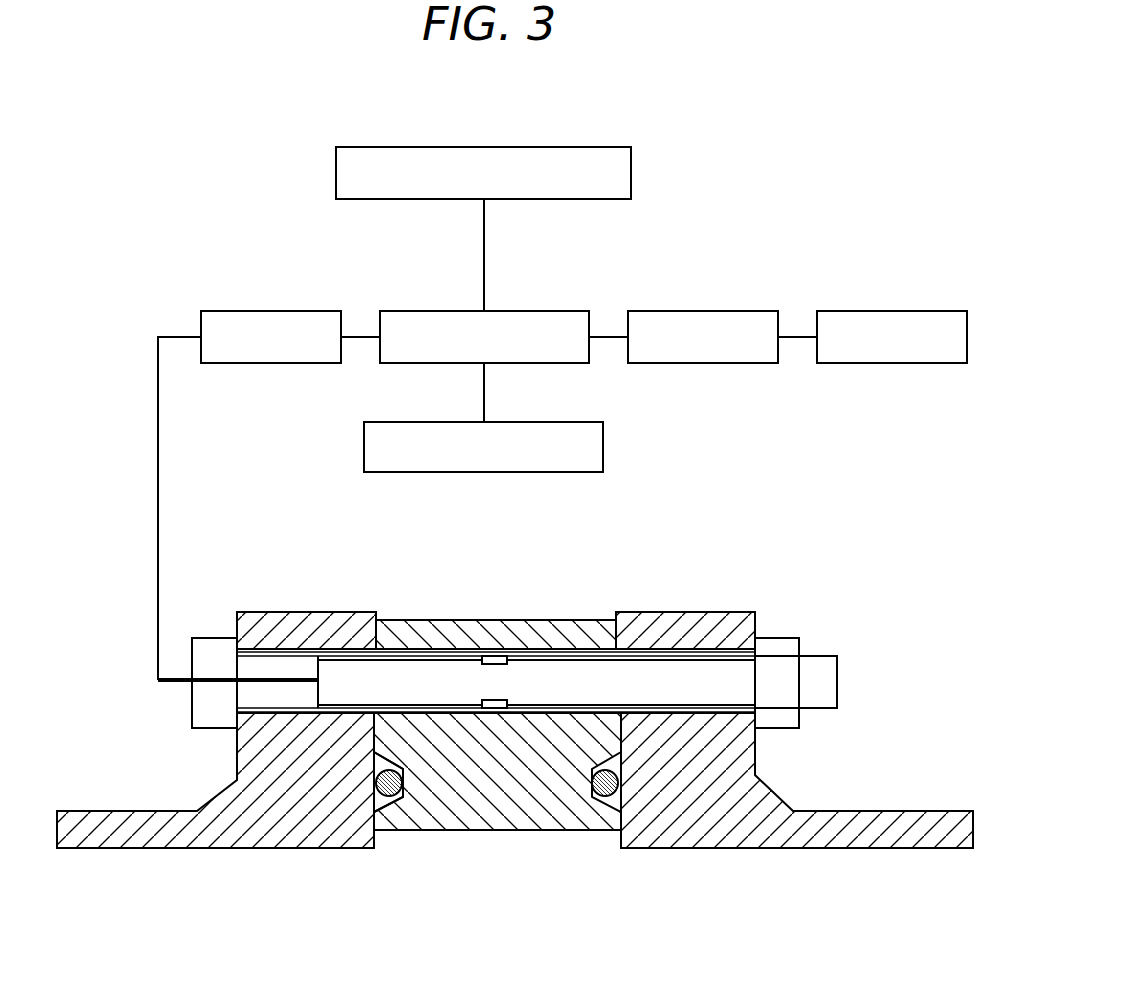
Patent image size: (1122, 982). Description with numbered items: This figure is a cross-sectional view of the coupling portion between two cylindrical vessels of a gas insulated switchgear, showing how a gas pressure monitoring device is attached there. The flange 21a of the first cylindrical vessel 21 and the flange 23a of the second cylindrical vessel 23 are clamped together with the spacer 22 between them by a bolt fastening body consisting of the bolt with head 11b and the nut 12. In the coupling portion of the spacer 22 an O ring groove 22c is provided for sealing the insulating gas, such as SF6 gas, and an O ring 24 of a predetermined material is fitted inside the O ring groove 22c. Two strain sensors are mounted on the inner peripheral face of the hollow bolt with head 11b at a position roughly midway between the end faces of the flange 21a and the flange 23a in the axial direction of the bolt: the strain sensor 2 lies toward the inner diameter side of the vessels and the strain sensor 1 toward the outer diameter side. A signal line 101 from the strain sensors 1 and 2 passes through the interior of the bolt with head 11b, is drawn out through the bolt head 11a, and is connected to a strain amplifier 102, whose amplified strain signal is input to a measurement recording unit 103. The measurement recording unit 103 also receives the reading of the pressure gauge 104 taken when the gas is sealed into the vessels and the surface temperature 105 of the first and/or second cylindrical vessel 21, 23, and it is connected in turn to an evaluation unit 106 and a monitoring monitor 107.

The strain sensor 1 is at (496, 656).
The strain sensor 2 is at (497, 708).
The bolt head 11a is at (192, 700).
The bolt with head 11b is at (820, 656).
The nut 12 is at (771, 638).
The first cylindrical vessel 21 is at (90, 811).
The flange 21a is at (297, 612).
The spacer 22 is at (573, 620).
The O ring groove 22c is at (393, 800).
The second cylindrical vessel 23 is at (883, 811).
The flange 23a is at (696, 612).
The O ring 24 is at (380, 788).
The signal line 101 is at (158, 598).
The strain amplifier 102 is at (262, 309).
The measurement recording unit 103 is at (510, 309).
The pressure gauge 104 is at (530, 420).
The surface temperature 105 is at (547, 144).
The evaluation unit 106 is at (700, 309).
The monitoring monitor 107 is at (888, 309).